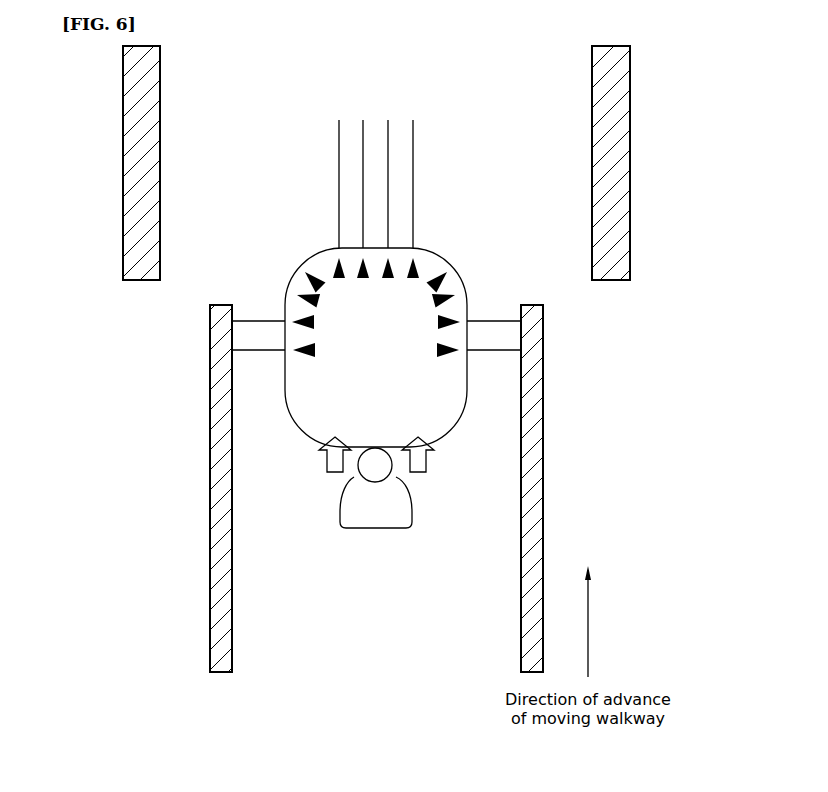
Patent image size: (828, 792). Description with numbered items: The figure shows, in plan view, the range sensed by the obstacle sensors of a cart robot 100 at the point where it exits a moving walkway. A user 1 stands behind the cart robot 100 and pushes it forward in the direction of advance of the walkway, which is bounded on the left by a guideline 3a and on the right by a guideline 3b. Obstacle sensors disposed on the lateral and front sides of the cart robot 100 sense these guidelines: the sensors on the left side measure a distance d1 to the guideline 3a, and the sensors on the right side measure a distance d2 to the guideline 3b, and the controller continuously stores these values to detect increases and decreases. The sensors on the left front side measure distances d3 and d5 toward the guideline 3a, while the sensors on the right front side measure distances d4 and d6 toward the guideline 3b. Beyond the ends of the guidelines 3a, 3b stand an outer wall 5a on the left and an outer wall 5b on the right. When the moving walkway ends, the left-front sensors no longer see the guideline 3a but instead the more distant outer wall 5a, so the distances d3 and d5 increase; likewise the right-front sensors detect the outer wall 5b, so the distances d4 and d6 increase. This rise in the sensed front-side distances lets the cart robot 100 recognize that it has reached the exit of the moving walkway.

The user 1 is at (348, 520).
The cart robot 100 is at (300, 432).
The guideline of the moving walkway 3a is at (210, 559).
The guideline of the moving walkway 3b is at (545, 418).
The outer wall 5a is at (123, 177).
The outer wall 5b is at (630, 177).
The distance d1 is at (281, 363).
The distance d2 is at (471, 363).
The distance d3 is at (160, 212).
The distance d4 is at (592, 212).
The distance d5 is at (160, 83).
The distance d6 is at (592, 83).